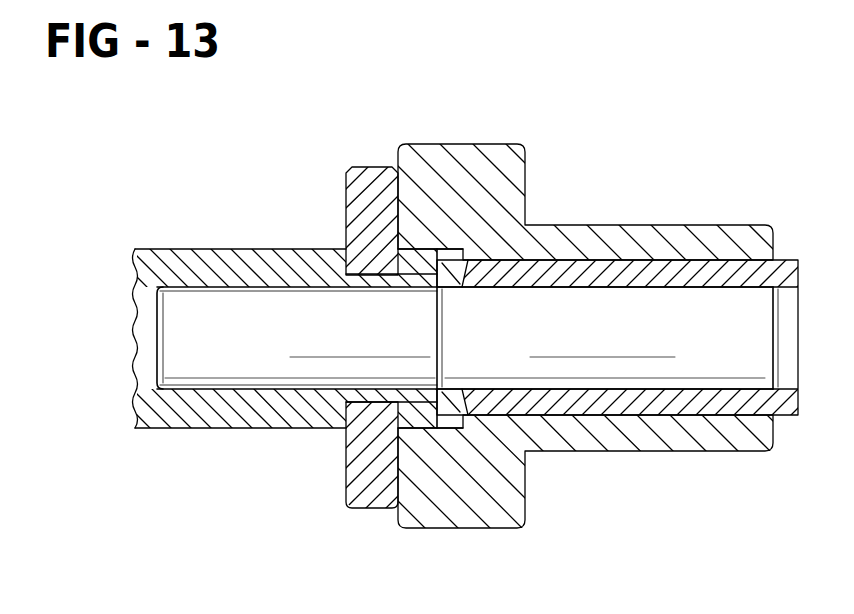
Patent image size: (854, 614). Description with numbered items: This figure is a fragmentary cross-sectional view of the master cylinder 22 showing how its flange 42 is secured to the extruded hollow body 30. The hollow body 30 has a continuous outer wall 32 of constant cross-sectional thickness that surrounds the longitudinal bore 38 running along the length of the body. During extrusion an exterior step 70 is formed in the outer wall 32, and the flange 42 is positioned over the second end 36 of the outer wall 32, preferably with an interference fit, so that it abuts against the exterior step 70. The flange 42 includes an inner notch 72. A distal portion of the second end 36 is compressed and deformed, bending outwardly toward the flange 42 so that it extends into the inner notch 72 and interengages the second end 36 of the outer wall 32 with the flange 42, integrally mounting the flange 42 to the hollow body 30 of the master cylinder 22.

The master cylinder 22 is at (212, 458).
The hollow body 30 is at (157, 249).
The outer wall 32 is at (159, 428).
The bore 38 is at (132, 313).
The exterior step 70 is at (328, 249).
The flange 42 is at (366, 508).
The inner notch 72 is at (445, 260).
The second end 36 is at (451, 287).